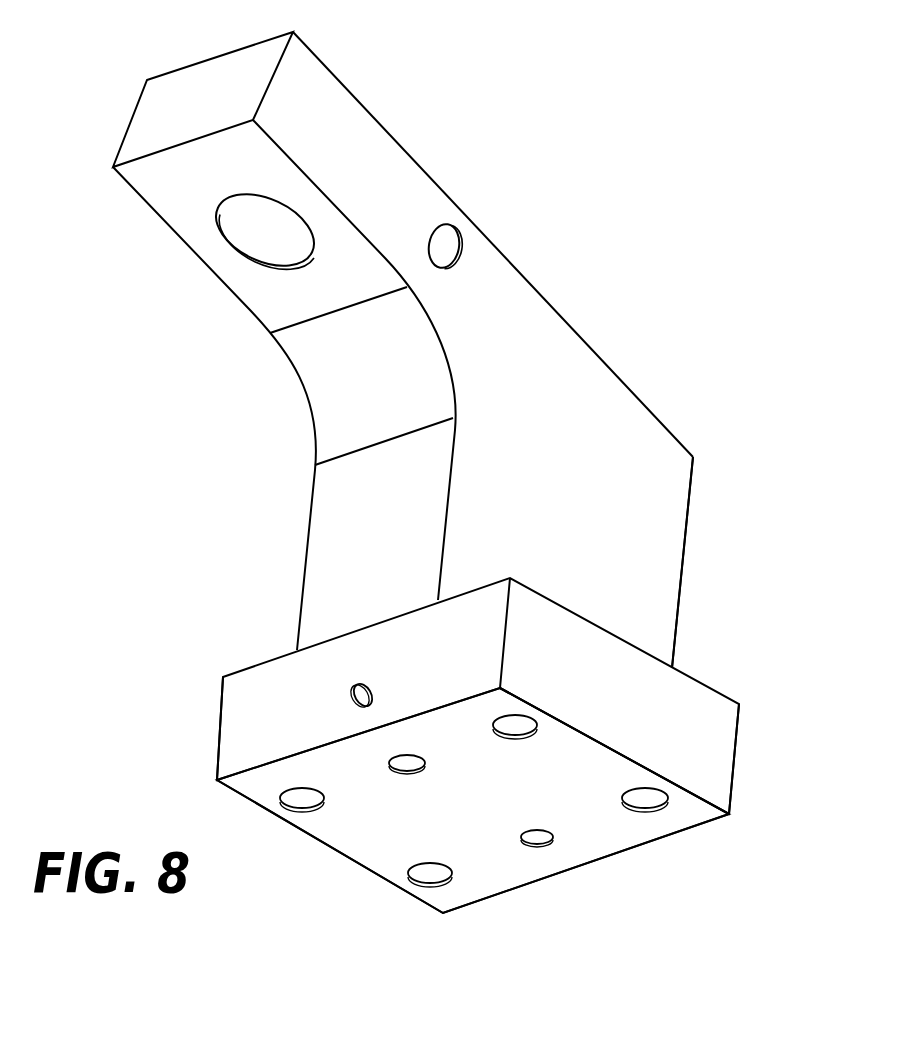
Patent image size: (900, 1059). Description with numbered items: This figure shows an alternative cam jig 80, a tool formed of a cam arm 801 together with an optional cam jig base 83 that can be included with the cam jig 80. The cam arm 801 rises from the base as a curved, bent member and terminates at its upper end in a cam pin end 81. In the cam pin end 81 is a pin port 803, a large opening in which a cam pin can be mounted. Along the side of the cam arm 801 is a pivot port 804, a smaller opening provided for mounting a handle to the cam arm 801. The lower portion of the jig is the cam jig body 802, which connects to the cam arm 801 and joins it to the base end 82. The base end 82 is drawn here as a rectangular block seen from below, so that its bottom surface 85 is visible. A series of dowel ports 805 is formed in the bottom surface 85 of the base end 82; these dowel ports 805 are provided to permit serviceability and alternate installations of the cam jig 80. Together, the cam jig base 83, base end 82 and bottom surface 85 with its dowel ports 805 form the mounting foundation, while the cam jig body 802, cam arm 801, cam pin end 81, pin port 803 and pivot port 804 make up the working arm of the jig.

The cam jig 80 is at (657, 442).
The cam pin end 81 is at (213, 75).
The cam arm 801 is at (388, 142).
The cam jig body 802 is at (682, 580).
The pin port 803 is at (218, 218).
The pivot port 804 is at (452, 228).
The dowel ports 805 is at (645, 808).
The base end 82 is at (514, 753).
The cam jig base 83 is at (725, 763).
The bottom surface 85 is at (686, 818).